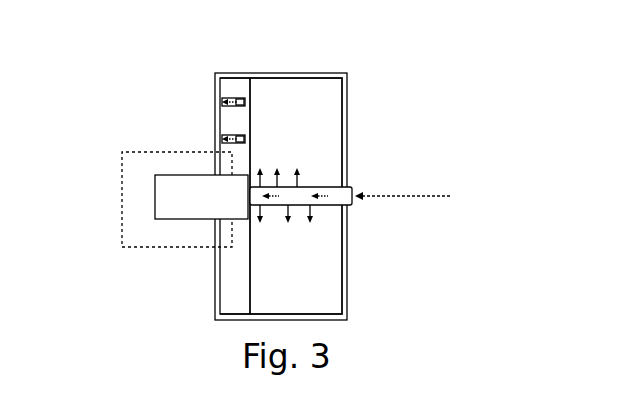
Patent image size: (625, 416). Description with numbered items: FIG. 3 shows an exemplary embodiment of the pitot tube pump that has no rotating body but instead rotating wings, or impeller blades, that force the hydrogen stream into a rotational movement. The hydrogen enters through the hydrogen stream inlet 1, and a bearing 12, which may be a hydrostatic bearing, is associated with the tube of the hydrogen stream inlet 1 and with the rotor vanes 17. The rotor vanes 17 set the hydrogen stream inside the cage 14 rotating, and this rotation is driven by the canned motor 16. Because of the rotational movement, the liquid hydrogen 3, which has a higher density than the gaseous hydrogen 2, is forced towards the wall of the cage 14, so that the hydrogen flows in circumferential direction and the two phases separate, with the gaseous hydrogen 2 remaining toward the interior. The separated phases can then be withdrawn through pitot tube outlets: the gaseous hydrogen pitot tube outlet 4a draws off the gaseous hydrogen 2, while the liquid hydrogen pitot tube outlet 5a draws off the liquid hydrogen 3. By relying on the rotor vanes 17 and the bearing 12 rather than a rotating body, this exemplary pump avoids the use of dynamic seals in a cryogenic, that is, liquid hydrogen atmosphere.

The hydrogen stream inlet 1 is at (365, 200).
The gaseous hydrogen 2 is at (228, 228).
The liquid hydrogen 3 is at (233, 82).
The gaseous hydrogen pitot tube/outlet 4a is at (220, 139).
The liquid hydrogen pitot tube/outlet 5a is at (220, 101).
The bearing 12 is at (315, 206).
The cage 14 is at (347, 97).
The canned motor 16 is at (172, 200).
The rotor vanes 17 is at (302, 103).